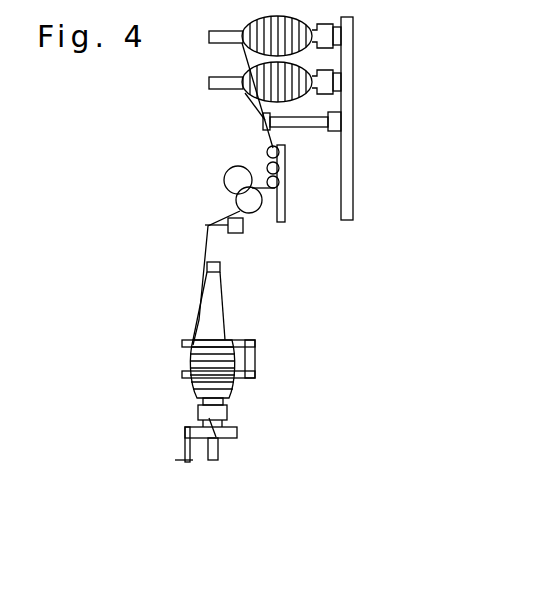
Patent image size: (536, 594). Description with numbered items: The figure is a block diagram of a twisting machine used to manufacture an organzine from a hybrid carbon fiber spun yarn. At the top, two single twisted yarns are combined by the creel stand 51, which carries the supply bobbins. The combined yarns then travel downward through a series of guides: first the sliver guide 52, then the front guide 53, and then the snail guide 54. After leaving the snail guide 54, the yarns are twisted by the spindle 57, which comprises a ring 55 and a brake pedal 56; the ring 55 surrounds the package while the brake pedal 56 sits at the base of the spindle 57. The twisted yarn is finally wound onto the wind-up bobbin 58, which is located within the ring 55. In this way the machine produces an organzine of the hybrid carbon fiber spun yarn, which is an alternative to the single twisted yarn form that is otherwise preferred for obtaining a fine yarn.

The creel stand 51 is at (353, 53).
The sliver guide 52 is at (267, 152).
The front guide 53 is at (230, 174).
The snail guide 54 is at (243, 230).
The ring 55 is at (255, 350).
The brake pedal 56 is at (187, 462).
The spindle 57 is at (220, 270).
The wind-up bobbin 58 is at (183, 376).